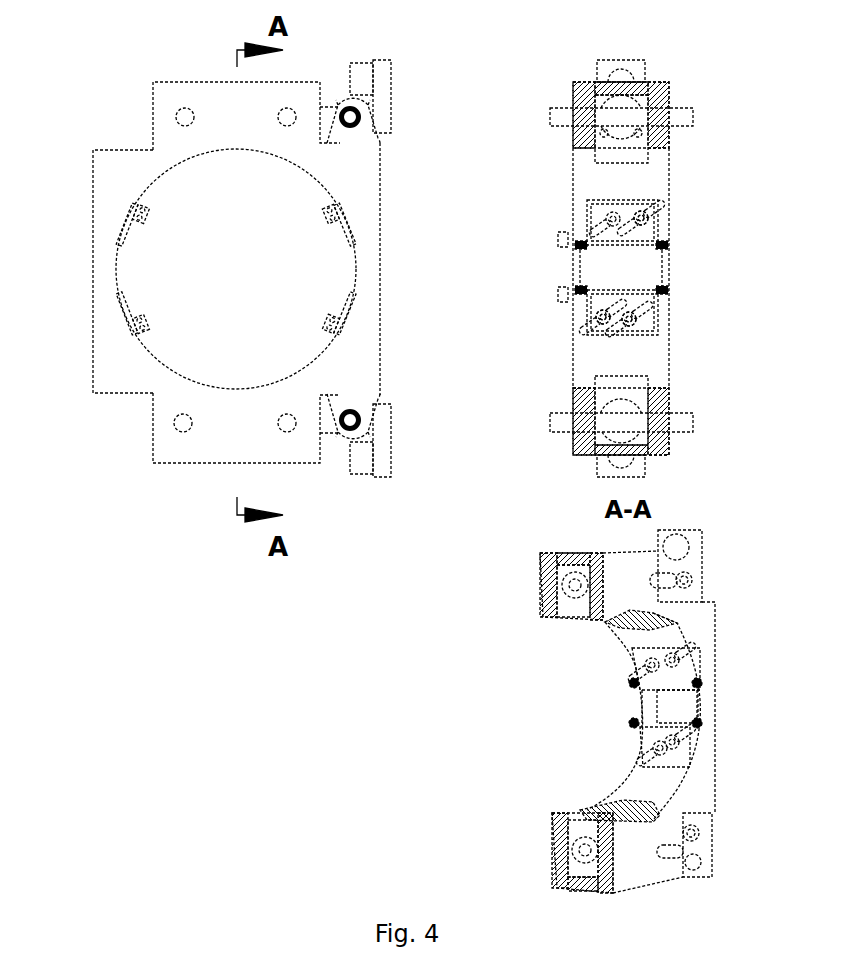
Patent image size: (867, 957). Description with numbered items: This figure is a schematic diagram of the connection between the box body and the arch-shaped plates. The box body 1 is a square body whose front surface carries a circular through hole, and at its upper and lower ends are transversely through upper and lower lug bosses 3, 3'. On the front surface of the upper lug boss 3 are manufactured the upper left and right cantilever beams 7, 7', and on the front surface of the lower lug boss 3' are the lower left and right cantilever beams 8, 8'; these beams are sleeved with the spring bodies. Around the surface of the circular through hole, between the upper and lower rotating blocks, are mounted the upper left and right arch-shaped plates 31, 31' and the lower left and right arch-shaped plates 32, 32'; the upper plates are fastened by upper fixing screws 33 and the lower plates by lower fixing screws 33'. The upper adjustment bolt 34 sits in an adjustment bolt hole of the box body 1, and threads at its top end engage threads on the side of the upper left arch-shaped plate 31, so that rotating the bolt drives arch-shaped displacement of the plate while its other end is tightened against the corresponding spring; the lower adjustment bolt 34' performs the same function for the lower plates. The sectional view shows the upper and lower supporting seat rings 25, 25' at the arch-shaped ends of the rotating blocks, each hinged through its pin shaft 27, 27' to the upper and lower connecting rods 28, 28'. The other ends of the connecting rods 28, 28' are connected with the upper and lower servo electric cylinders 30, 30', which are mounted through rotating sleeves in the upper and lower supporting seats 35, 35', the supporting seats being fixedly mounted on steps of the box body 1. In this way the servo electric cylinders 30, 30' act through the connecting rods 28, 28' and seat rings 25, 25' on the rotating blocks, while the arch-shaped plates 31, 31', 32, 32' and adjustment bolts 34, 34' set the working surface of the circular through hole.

The box body 1 is at (115, 372).
The upper lug boss 3 is at (210, 83).
The lower lug boss 3' is at (220, 461).
The upper left cantilever beam 7 is at (202, 71).
The upper right cantilever beam 7' is at (312, 71).
The lower left cantilever beam 8 is at (189, 471).
The lower right cantilever beam 8' is at (313, 471).
The upper supporting seat ring 25 is at (665, 103).
The lower supporting seat ring 25' is at (669, 404).
The pin shaft 27 is at (654, 104).
The lower pin shaft 27' is at (659, 413).
The upper connecting rod 28 is at (550, 586).
The lower connecting rod 28' is at (555, 853).
The upper servo electric cylinder 30 is at (555, 305).
The lower servo electric cylinder 30' is at (560, 640).
The upper left arch-shaped plate 31 is at (85, 215).
The upper right arch-shaped plate 31' is at (543, 419).
The lower left arch-shaped plate 32 is at (84, 311).
The lower right arch-shaped plate 32' is at (543, 506).
The upper fixing screw 33 is at (91, 189).
The lower fixing screw 33' is at (87, 351).
The upper adjustment bolt 34 is at (598, 435).
The lower adjustment bolt 34' is at (597, 483).
The upper supporting seat 35 is at (543, 337).
The lower supporting seat 35' is at (546, 598).